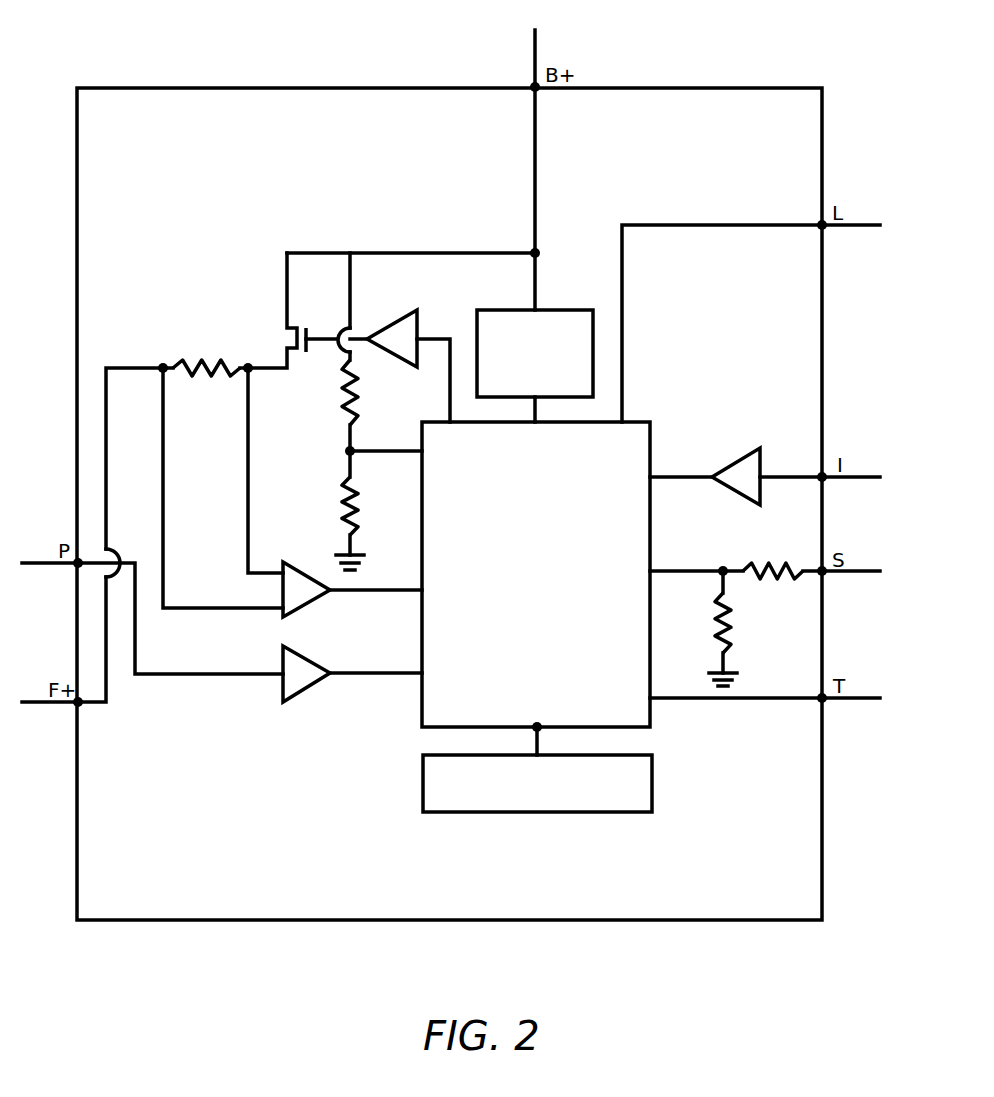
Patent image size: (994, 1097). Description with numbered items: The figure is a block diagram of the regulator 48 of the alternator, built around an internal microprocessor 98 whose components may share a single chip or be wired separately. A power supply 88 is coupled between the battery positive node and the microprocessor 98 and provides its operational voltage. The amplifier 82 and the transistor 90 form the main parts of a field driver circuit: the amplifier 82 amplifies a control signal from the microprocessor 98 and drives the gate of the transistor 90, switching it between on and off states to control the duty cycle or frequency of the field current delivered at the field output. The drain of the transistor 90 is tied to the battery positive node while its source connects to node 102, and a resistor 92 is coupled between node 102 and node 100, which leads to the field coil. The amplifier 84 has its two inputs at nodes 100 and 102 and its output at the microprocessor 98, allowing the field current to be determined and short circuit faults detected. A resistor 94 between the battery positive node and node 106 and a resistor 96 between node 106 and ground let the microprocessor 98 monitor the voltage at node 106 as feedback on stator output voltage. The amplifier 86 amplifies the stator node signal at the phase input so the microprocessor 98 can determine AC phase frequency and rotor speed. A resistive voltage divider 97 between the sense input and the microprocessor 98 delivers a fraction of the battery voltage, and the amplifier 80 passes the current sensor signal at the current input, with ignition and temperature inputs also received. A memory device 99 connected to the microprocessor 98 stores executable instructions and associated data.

The regulator 48 is at (275, 88).
The amplifier 80 is at (738, 455).
The amplifier 82 is at (427, 318).
The amplifier 84 is at (310, 607).
The amplifier 86 is at (310, 690).
The power supply 88 is at (560, 310).
The transistor 90 is at (318, 332).
The resistor 92 is at (208, 378).
The resistor 94 is at (343, 392).
The resistor 96 is at (340, 494).
The voltage divider 97 is at (778, 612).
The microprocessor 98 is at (652, 542).
The memory device 99 is at (652, 787).
The node 100 is at (162, 365).
The node 102 is at (245, 365).
The node 106 is at (347, 455).